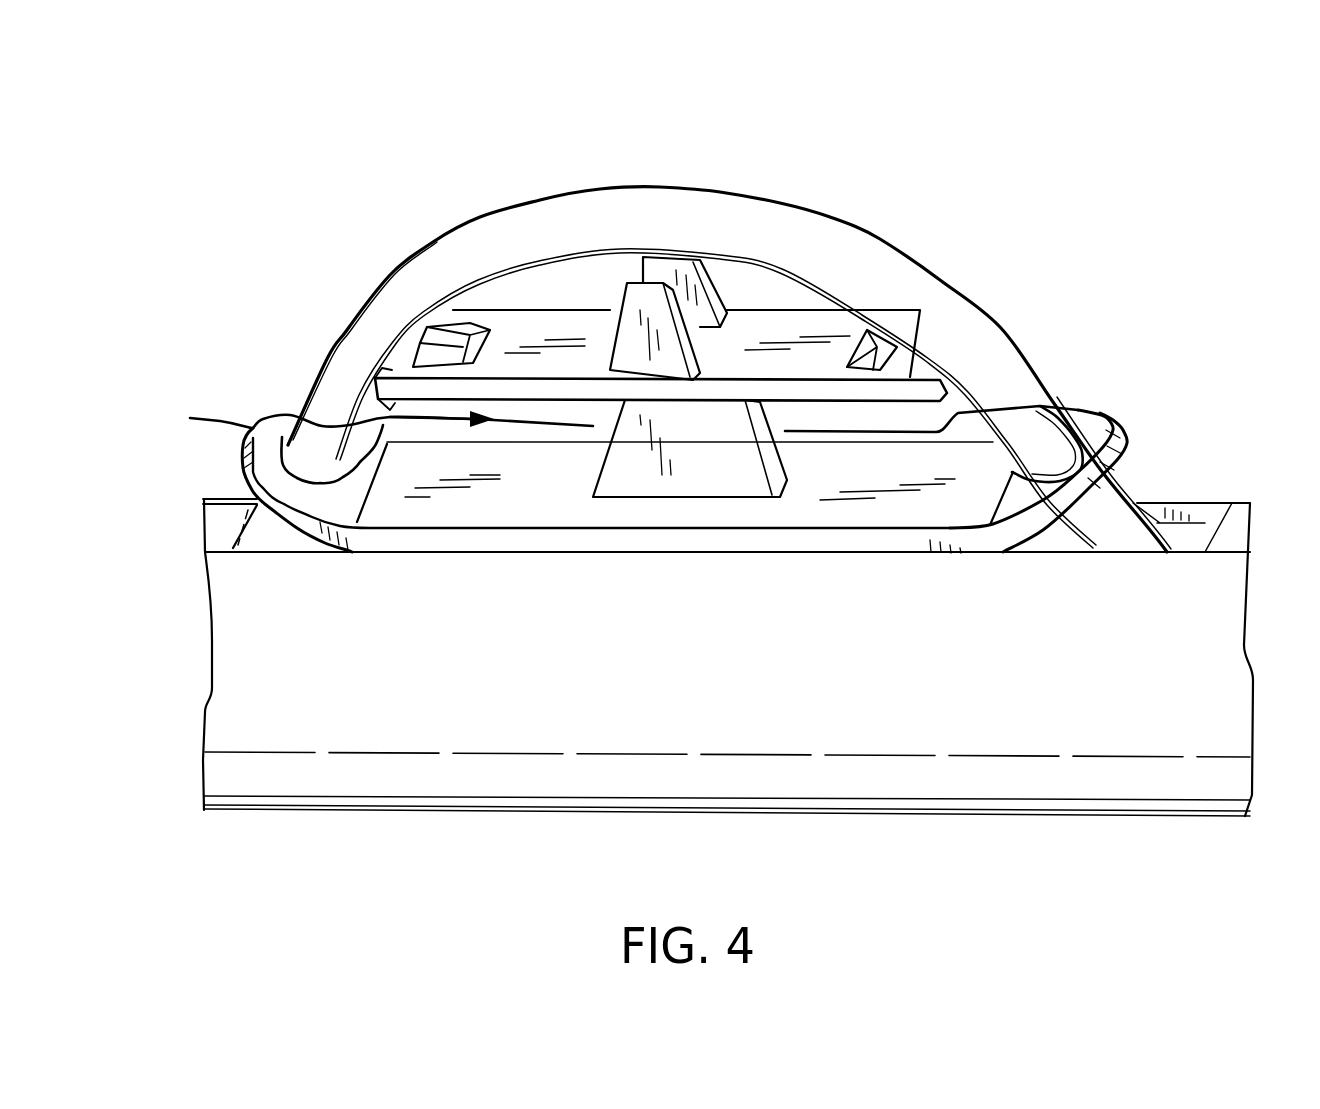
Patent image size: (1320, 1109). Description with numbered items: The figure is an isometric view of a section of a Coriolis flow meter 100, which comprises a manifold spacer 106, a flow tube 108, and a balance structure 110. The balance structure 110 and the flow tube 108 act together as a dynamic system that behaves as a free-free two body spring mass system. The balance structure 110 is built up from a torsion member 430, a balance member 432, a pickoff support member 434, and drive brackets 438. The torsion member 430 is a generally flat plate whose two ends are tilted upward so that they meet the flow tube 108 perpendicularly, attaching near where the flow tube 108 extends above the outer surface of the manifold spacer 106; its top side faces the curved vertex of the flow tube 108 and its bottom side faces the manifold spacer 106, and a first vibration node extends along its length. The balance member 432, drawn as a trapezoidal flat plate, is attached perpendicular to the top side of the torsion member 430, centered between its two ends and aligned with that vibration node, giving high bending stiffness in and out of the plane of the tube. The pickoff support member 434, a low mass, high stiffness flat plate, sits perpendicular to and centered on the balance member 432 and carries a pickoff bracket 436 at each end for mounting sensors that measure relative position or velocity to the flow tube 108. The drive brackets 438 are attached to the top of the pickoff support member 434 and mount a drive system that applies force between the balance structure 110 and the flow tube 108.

The Coriolis flow meter 100 is at (1085, 168).
The manifold spacer 106 is at (248, 810).
The flow tube 108 is at (768, 202).
The balance structure 110 is at (312, 421).
The torsion member 430 is at (840, 529).
The balance member 432 is at (1040, 406).
The pickoff support member 434 is at (803, 312).
The pickoff bracket 436 is at (417, 362).
The drive brackets 438 is at (620, 303).